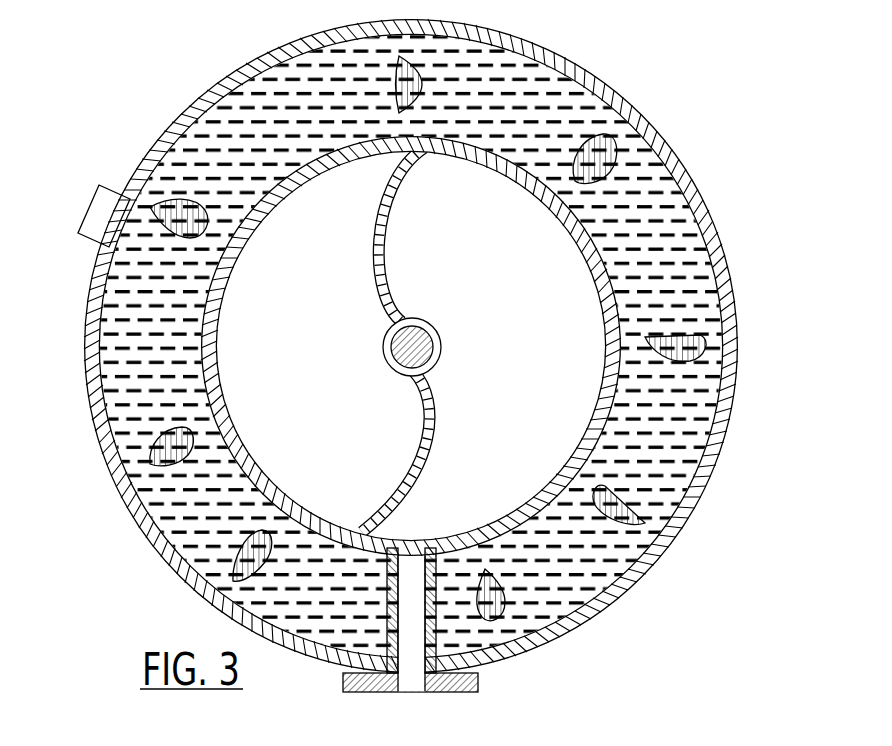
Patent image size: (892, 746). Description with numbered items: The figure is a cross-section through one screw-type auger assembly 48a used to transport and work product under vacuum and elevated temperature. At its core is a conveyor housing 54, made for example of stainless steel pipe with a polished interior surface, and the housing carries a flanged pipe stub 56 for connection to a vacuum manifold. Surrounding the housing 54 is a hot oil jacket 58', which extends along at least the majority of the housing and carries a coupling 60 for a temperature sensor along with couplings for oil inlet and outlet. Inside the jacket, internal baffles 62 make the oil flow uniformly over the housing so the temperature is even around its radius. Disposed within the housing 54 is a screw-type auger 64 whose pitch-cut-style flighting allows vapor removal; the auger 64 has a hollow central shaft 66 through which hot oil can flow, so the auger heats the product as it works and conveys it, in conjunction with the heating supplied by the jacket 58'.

The screw-type auger assembly 48a is at (148, 121).
The housing 54 is at (517, 160).
The flanged pipe stub 56 is at (479, 684).
The hot oil jacket 58' is at (422, 346).
The coupling for a temperature sensor 60 is at (105, 218).
The internal baffles 62 is at (682, 334).
The screw-type auger 64 is at (430, 478).
The hollow central shaft 66 is at (395, 346).